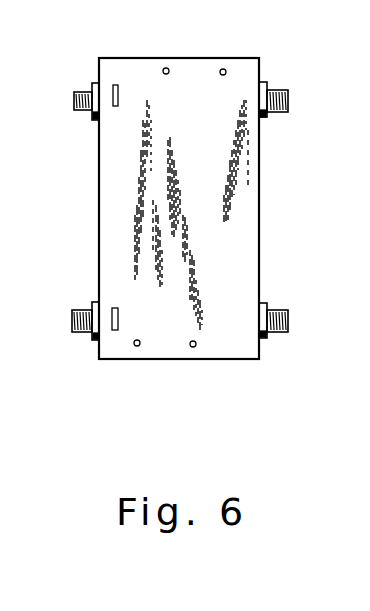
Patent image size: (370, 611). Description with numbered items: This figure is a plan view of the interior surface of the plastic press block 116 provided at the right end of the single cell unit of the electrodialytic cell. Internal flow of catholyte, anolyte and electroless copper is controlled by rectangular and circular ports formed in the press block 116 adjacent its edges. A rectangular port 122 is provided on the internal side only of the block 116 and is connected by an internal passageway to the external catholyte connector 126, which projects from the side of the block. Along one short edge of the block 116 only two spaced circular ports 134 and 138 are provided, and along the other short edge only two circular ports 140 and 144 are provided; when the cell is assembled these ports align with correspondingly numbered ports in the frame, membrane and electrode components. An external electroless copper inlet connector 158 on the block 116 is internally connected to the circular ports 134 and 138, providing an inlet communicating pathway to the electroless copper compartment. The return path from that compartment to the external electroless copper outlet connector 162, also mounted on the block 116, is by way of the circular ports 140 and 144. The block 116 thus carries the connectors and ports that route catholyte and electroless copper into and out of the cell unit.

The press block 116 is at (110, 178).
The rectangular port 122 is at (112, 84).
The external catholyte connector 126 is at (73, 97).
The circular port 134 is at (195, 348).
The circular port 138 is at (136, 347).
The circular port 140 is at (226, 70).
The circular port 144 is at (165, 68).
The external electroless copper inlet connector 158 is at (290, 322).
The external electroless copper outlet connector 162 is at (288, 92).